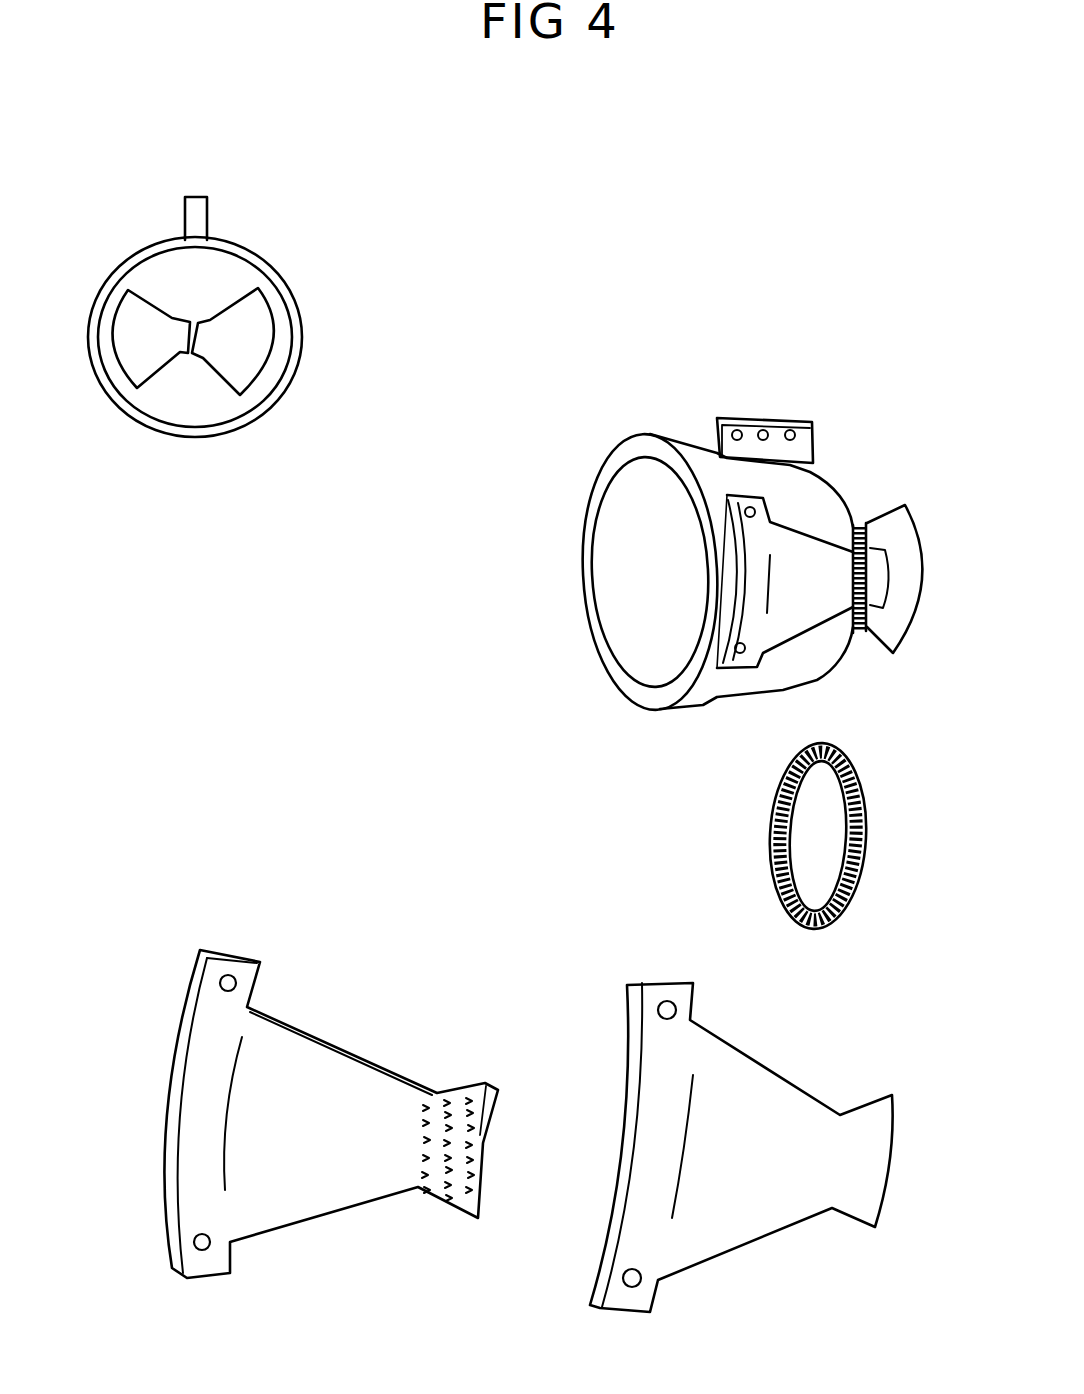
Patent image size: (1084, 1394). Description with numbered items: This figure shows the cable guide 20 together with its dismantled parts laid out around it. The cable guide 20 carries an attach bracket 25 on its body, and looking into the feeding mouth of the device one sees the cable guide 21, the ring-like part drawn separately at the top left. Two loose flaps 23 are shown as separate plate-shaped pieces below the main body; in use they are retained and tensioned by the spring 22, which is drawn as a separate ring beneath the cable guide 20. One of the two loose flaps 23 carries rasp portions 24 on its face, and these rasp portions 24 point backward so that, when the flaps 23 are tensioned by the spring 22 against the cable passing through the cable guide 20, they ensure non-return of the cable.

The cable guide 20 is at (825, 442).
The cable guide 21 is at (283, 260).
The spring 22 is at (760, 820).
The loose flaps 23 is at (330, 1037).
The rasp portions 24 is at (427, 1202).
The attach bracket 25 is at (717, 412).